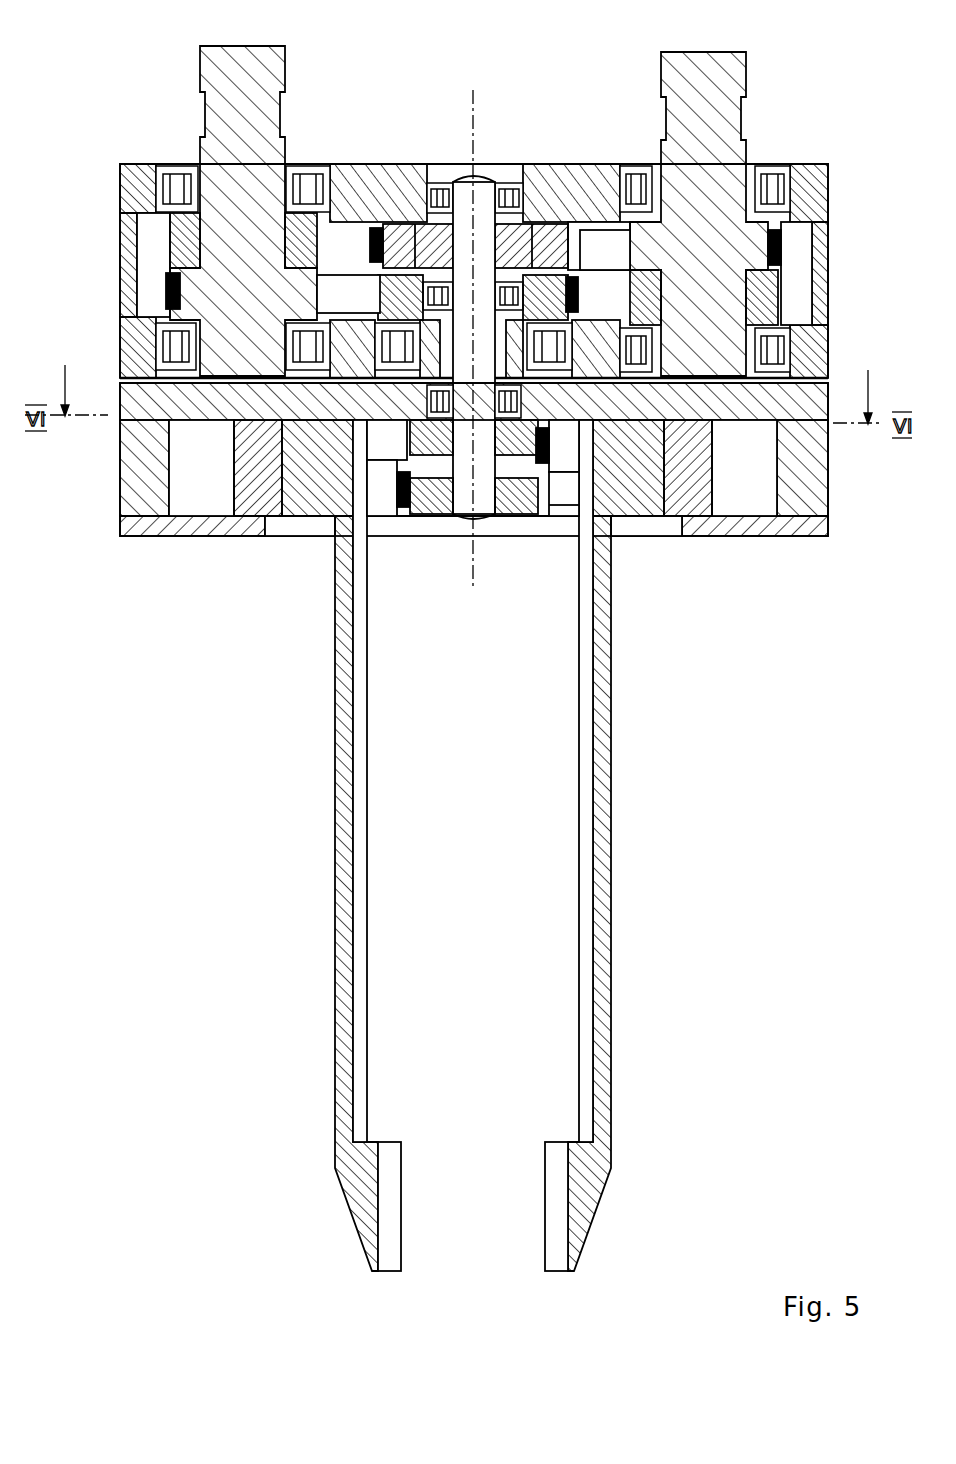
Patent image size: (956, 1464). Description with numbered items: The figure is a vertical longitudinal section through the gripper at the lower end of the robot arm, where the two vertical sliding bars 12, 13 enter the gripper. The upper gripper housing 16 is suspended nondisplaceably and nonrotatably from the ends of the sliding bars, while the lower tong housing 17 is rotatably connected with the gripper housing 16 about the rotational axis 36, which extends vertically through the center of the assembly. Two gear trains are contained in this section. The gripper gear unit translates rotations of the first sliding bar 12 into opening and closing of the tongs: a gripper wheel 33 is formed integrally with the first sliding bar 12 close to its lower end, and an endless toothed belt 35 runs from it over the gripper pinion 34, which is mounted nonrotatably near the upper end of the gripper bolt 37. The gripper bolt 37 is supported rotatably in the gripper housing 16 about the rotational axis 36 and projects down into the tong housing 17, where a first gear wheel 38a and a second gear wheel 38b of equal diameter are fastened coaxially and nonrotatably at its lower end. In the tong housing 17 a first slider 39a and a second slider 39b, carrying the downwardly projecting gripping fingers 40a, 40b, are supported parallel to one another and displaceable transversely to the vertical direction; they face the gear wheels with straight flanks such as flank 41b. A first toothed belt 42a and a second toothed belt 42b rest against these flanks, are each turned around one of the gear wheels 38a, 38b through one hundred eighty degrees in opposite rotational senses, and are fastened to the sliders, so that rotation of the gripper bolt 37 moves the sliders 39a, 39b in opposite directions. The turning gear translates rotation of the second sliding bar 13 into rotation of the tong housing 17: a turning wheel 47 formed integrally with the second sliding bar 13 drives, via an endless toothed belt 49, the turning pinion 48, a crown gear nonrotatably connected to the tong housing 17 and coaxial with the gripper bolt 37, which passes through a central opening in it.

The first sliding bar 12 is at (733, 205).
The second sliding bar 13 is at (196, 210).
The gripper housing 16 is at (514, 271).
The tong housing 17 is at (519, 459).
The gripper wheel 33 is at (833, 214).
The gripper pinion 34 is at (560, 195).
The endless toothed belt 35 is at (615, 193).
The rotational axis 36 is at (435, 301).
The gripper bolt 37 is at (519, 266).
The first gear wheel 38a is at (240, 467).
The second gear wheel 38b is at (611, 551).
The first slider 39a is at (204, 508).
The second slider 39b is at (745, 507).
The gripping finger 40a is at (302, 845).
The gripping finger 40b is at (642, 845).
The flank 41b is at (412, 781).
The first toothed belt 42a is at (306, 564).
The second toothed belt 42b is at (652, 529).
The turning wheel 47 is at (119, 264).
The turning pinion 48 is at (396, 193).
The endless toothed belt 49 is at (321, 161).